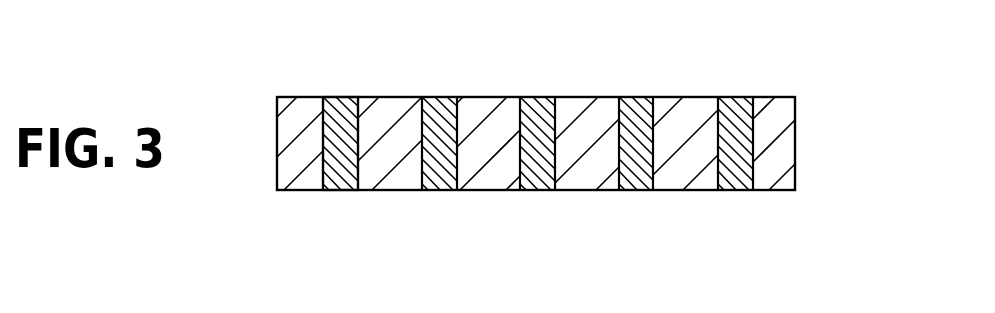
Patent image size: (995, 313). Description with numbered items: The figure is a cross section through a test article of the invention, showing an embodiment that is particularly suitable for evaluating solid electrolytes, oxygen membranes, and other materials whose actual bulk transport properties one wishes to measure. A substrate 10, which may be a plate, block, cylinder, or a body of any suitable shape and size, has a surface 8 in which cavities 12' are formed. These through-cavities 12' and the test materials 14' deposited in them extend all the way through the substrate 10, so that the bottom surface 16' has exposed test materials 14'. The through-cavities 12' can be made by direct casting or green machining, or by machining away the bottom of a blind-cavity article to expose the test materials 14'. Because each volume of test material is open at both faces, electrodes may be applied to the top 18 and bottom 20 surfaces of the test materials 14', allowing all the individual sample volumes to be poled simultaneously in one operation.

The substrate 10 is at (795, 147).
The surface 8 is at (683, 97).
The through-cavities 12' is at (390, 99).
The test materials 14' is at (567, 101).
The bottom surface 16' is at (616, 183).
The top surface 18 is at (333, 97).
The bottom surface 20 is at (342, 190).